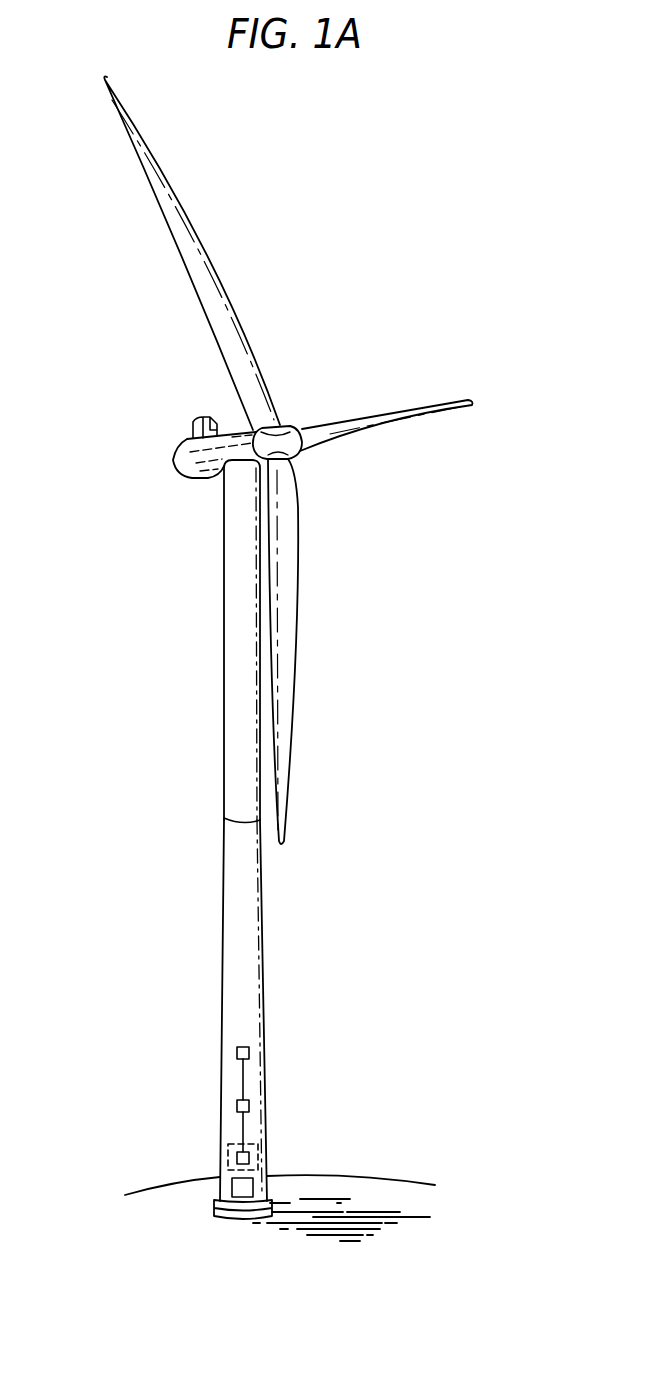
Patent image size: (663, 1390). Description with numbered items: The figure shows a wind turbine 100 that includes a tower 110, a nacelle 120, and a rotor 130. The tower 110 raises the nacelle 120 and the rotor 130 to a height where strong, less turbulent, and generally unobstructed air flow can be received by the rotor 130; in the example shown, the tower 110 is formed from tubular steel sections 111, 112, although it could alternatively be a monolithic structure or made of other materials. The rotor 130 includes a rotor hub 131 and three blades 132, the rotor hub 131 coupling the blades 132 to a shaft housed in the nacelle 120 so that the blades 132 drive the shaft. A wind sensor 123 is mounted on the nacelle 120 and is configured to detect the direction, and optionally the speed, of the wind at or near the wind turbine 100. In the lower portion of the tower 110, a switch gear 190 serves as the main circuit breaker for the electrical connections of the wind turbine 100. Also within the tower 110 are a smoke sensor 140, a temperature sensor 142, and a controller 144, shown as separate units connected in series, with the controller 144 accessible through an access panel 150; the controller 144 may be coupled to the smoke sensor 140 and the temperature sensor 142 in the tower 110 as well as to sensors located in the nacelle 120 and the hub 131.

The wind turbine 100 is at (356, 190).
The tower 110 is at (205, 765).
The tubular steel section 111 is at (237, 1002).
The tubular steel section 112 is at (242, 632).
The nacelle 120 is at (160, 461).
The wind sensor 123 is at (203, 417).
The rotor 130 is at (310, 467).
The rotor hub 131 is at (292, 440).
The blade 132 is at (153, 195).
The smoke sensor 140 is at (250, 1053).
The temperature sensor 142 is at (250, 1107).
The controller 144 is at (250, 1158).
The access panel 150 is at (229, 1156).
The switch gear 190 is at (233, 1185).